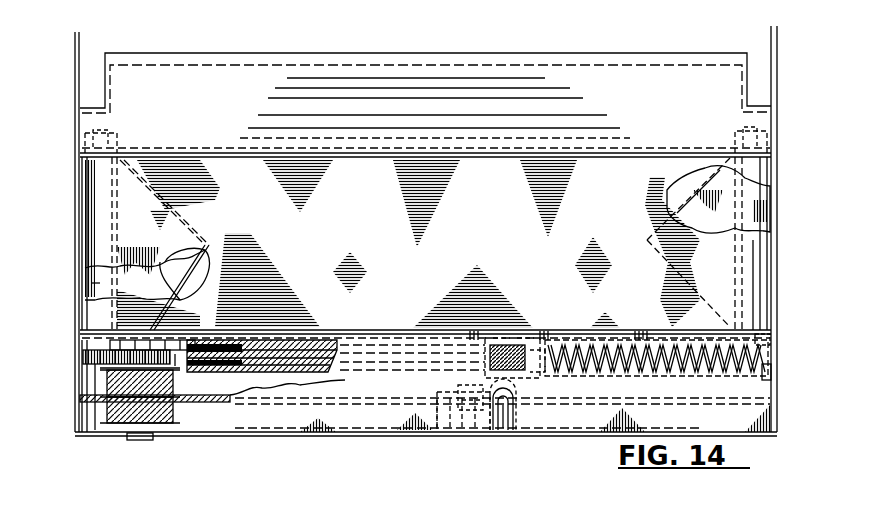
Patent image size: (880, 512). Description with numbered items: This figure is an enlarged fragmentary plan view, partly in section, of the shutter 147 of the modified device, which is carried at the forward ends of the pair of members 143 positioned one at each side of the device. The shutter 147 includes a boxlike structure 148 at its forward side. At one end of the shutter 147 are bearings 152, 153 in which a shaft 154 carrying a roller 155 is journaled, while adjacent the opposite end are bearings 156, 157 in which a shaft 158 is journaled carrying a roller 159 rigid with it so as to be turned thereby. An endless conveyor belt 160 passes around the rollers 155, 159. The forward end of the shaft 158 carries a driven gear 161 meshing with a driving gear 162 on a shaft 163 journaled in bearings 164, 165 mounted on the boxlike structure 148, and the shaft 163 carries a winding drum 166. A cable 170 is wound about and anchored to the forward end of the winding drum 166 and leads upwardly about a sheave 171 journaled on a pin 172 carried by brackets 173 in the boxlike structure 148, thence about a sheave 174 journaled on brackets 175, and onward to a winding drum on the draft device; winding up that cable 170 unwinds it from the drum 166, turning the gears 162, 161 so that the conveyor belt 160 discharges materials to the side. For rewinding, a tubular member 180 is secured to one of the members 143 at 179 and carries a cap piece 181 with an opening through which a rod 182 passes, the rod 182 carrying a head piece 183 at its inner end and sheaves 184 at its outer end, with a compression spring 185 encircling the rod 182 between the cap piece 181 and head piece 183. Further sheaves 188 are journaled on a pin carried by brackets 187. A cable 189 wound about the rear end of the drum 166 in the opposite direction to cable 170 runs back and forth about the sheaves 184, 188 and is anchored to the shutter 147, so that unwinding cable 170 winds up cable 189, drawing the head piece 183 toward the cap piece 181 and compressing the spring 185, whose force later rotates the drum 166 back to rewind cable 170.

The members 143 is at (75, 91).
The shutter 147 is at (628, 76).
The boxlike structure 148 is at (362, 415).
The bearing 152 is at (760, 141).
The bearing 153 is at (777, 332).
The shaft 154 is at (757, 127).
The roller 155 is at (755, 188).
The bearing 156 is at (85, 134).
The bearing 157 is at (110, 338).
The shaft 158 is at (85, 152).
The roller 159 is at (92, 283).
The endless conveyor belt 160 is at (100, 241).
The driven gear 161 is at (95, 390).
The driving gear 162 is at (176, 353).
The shaft 163 is at (107, 458).
The bearing 164 is at (150, 333).
The bearing 165 is at (140, 440).
The winding drum 166 is at (186, 396).
The cable 170 is at (203, 398).
The sheave 171 is at (462, 430).
The pin 172 is at (475, 430).
The brackets 173 is at (450, 430).
The sheave 174 is at (513, 405).
The brackets 175 is at (516, 419).
The securing point 179 is at (777, 374).
The tubular member 180 is at (698, 376).
The cap piece 181 is at (545, 335).
The rod 182 is at (660, 376).
The head piece 183 is at (777, 347).
The sheaves 184 is at (510, 335).
The compression spring 185 is at (680, 376).
The brackets 187 is at (212, 340).
The sheaves 188 is at (222, 340).
The cable 189 is at (242, 340).